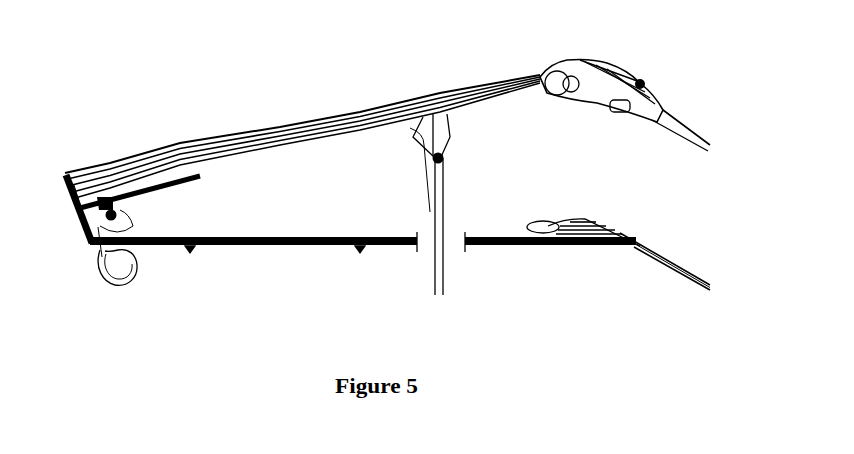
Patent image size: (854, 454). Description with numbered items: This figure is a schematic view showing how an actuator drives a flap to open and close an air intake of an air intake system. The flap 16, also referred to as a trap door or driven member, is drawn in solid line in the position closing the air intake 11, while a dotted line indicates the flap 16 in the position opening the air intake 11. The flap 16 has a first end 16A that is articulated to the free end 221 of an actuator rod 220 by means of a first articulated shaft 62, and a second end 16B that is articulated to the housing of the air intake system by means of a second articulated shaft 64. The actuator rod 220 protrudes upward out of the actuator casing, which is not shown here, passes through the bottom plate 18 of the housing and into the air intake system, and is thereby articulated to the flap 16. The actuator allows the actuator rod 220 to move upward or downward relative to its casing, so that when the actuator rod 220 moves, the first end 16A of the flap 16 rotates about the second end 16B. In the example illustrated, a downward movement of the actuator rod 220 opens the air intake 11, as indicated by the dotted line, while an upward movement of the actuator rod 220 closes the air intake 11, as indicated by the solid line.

The air intake 11 is at (505, 74).
The flap 16 is at (267, 140).
The first end of the flap 16A is at (456, 108).
The second end of the flap 16B is at (102, 193).
The bottom plate 18 is at (318, 247).
The first articulated shaft 62 is at (445, 157).
The second articulated shaft 64 is at (105, 214).
The actuator rod 220 is at (444, 274).
The free end of the actuator rod 221 is at (444, 183).